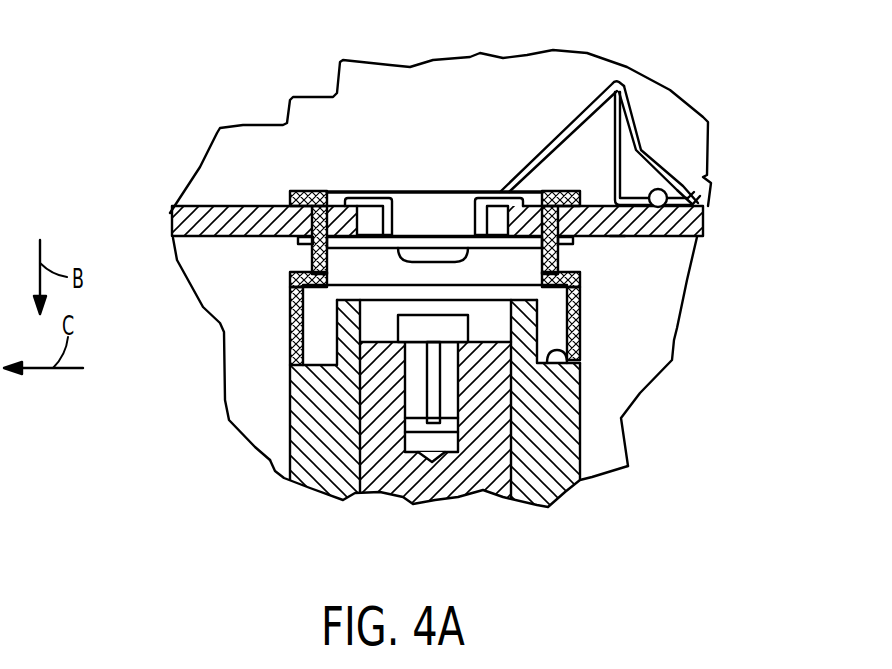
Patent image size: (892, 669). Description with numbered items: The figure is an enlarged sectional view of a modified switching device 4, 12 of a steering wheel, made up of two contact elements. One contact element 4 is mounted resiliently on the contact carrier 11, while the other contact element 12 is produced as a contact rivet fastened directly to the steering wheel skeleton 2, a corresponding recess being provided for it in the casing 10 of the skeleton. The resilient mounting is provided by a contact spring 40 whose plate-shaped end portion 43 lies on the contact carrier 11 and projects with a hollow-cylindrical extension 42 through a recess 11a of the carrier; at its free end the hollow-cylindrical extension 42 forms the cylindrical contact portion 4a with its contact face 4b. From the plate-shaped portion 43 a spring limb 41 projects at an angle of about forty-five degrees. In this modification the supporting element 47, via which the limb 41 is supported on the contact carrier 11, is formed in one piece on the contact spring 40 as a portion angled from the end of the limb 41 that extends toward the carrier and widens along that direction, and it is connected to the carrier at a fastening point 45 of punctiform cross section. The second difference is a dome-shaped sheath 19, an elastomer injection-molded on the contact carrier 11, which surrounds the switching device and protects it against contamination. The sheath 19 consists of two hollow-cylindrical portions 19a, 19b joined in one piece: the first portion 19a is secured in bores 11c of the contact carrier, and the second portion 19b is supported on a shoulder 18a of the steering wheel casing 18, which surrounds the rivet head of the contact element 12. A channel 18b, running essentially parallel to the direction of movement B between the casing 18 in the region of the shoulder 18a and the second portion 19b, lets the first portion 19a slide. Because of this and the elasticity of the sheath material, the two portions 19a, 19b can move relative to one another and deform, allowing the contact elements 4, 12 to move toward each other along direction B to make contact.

The steering wheel skeleton 2 is at (483, 492).
The contact element 4 is at (483, 358).
The contact portion 4a is at (558, 261).
The contact face 4b is at (460, 377).
The casing 10 is at (567, 487).
The contact carrier 11 is at (233, 207).
The recess 11a is at (370, 213).
The bores 11c is at (300, 240).
The contact element 12 is at (358, 430).
The steering wheel casing 18 is at (567, 314).
The shoulder 18a is at (583, 360).
The channel 18b is at (313, 342).
The dome-shaped sheath 19 is at (580, 194).
The hollow-cylindrical portion 19a is at (617, 240).
The hollow-cylindrical portion 19b is at (570, 347).
The contact spring 40 is at (524, 146).
The spring limb 41 is at (588, 110).
The hollow-cylindrical extension 42 is at (317, 192).
The plate-shaped end portion 43 is at (353, 190).
The fastening point 45 is at (670, 202).
The supporting element 47 is at (635, 113).